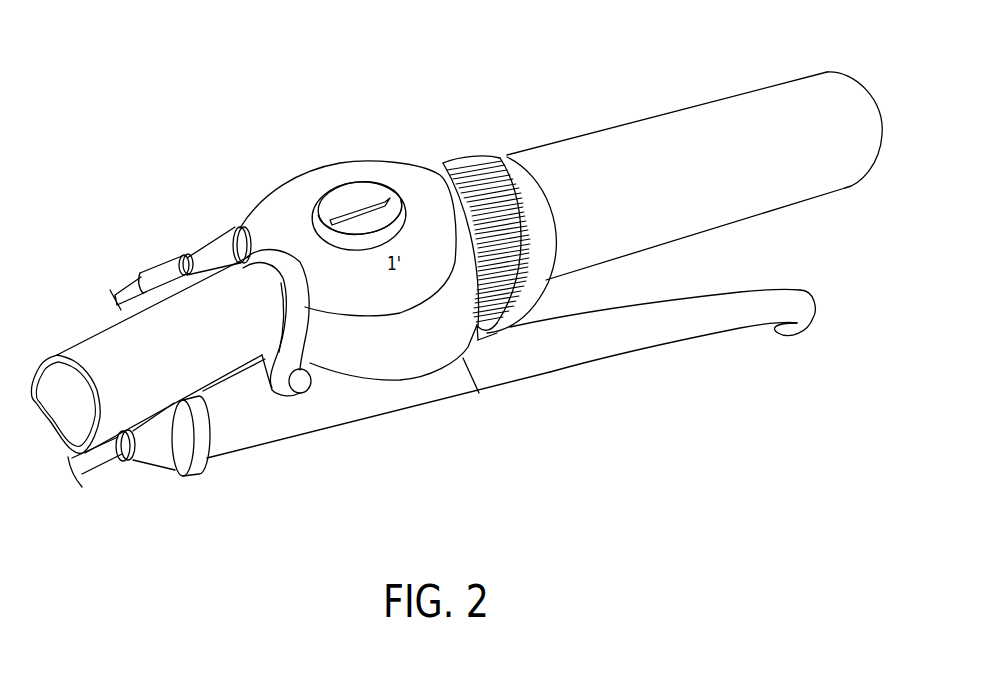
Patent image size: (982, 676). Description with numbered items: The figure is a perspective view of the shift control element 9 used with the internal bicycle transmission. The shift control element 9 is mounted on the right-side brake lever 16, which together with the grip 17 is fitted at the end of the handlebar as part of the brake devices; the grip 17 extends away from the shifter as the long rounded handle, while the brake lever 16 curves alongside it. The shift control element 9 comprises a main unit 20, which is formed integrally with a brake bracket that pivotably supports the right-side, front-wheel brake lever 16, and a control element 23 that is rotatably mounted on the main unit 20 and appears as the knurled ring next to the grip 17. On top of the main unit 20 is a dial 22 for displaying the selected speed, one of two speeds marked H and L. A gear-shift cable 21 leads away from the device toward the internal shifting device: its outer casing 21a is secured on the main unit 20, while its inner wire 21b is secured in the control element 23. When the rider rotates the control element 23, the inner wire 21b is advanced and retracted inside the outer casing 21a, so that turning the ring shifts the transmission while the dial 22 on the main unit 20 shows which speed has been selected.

The shift control element 9 is at (373, 96).
The brake lever 16 is at (711, 318).
The grip 17 is at (677, 122).
The main unit 20 is at (432, 360).
The gear-shift cable 21 is at (78, 214).
The outer casing 21a is at (167, 273).
The inner wire 21b is at (133, 290).
The dial 22 is at (320, 197).
The control element 23 is at (500, 155).